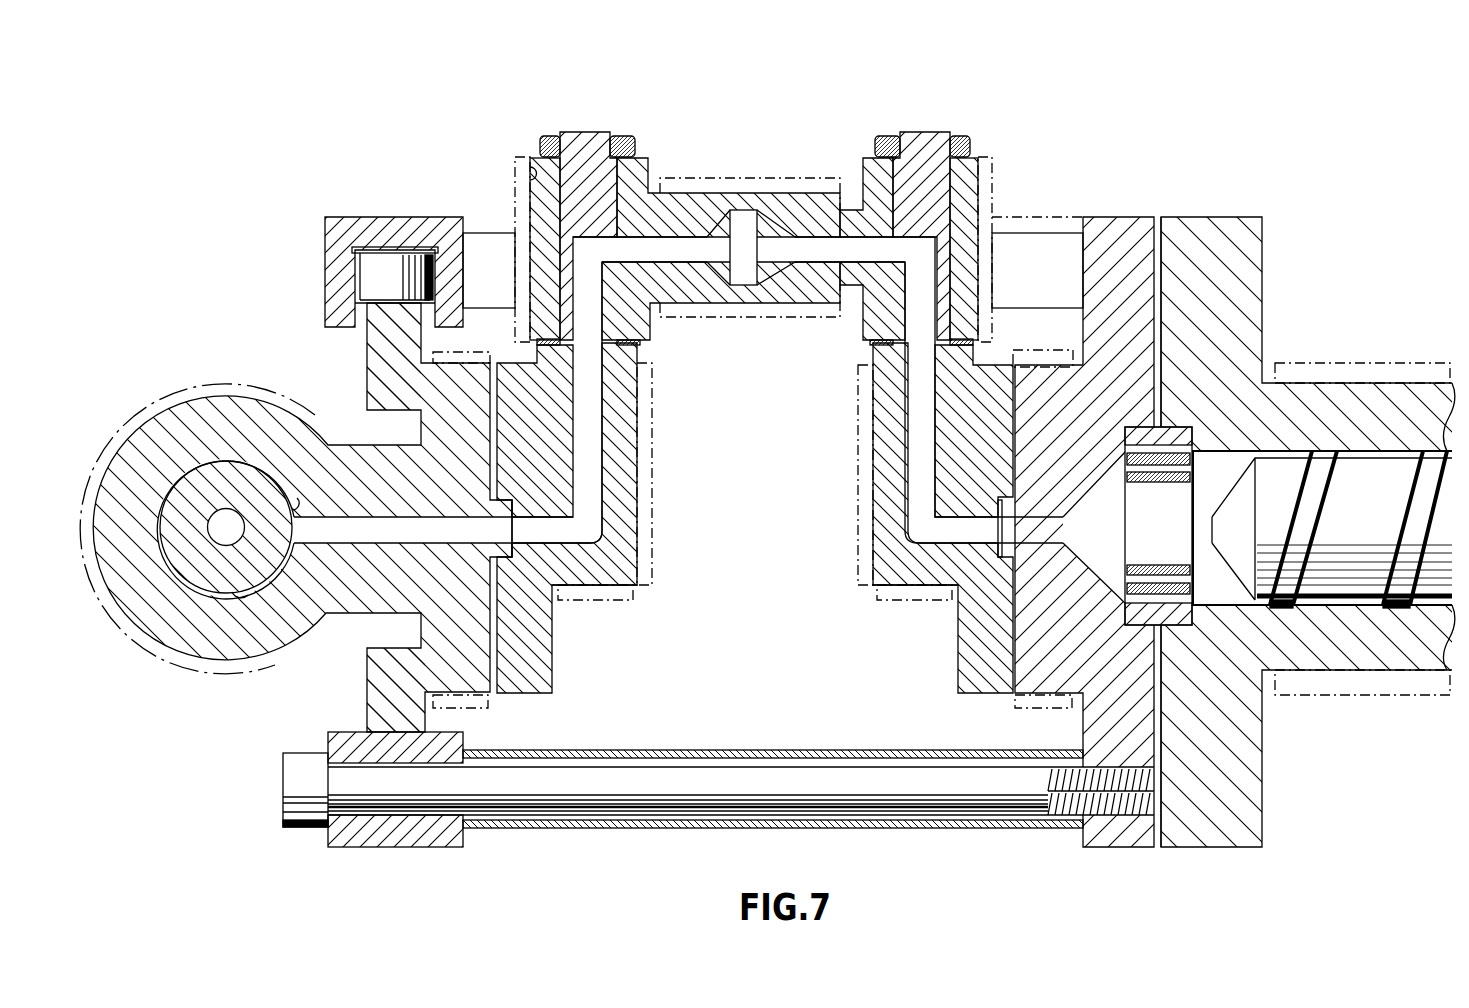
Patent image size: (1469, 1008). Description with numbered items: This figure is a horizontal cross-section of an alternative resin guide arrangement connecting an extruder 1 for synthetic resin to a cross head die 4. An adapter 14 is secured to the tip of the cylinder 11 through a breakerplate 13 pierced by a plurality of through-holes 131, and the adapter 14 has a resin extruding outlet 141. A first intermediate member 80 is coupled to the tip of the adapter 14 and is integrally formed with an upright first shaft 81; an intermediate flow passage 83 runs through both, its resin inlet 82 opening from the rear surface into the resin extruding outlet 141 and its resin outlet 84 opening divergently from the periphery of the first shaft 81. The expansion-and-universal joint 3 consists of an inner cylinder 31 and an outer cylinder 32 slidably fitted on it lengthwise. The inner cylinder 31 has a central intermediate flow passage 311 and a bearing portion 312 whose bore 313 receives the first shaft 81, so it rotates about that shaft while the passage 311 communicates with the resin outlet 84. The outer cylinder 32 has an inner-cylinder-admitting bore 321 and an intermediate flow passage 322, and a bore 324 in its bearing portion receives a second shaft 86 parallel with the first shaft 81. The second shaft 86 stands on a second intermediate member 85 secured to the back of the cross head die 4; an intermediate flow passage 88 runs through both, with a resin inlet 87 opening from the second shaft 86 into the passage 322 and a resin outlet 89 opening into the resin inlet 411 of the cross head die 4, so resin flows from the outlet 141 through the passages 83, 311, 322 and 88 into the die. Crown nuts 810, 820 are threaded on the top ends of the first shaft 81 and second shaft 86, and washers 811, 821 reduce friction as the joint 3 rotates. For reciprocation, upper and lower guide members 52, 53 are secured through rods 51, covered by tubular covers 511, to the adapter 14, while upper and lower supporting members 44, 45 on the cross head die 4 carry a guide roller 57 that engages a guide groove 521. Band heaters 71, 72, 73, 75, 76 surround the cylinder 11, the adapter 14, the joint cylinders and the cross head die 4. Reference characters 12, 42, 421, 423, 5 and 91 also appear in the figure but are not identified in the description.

The extruder 1 is at (1268, 532).
The cylinder 11 is at (1385, 393).
The bore with screw 12 is at (1351, 519).
The breakerplate 13 is at (1153, 504).
The through-holes 131 is at (1140, 468).
The adapter 14 is at (1116, 217).
The expansion-and-universal joint 3 is at (754, 237).
The inner cylinder 31 is at (808, 215).
The intermediate flow passage 311 is at (835, 247).
The bearing portion 312 is at (975, 165).
The bore 313 is at (948, 190).
The outer cylinder 32 is at (656, 200).
The inner-cylinder-admitting bore 321 is at (775, 215).
The intermediate flow passage 322 is at (690, 262).
The bore 324 is at (530, 170).
The cross head die 4 is at (341, 497).
The resin inlet 411 is at (430, 540).
The shaft 42 is at (183, 478).
The bore 421 is at (215, 527).
The groove 423 is at (244, 594).
The supporting member 44 is at (370, 342).
The supporting member 45 is at (368, 690).
The cap assembly 5 is at (369, 255).
The rods 51 is at (850, 810).
The tubular covers 511 is at (694, 828).
The guide member 52 is at (325, 255).
The guide groove 521 is at (368, 266).
The guide member 53 is at (455, 840).
The guide roller 57 is at (405, 262).
The band heater 71 is at (1330, 698).
The band heater 72 is at (1025, 706).
The band heater 73 is at (992, 217).
The band heater 75 is at (515, 190).
The band heater 76 is at (180, 662).
The first intermediate member 80 is at (875, 506).
The first shaft 81 is at (912, 130).
The crown nut 810 is at (876, 140).
The washer 811 is at (963, 140).
The resin inlet 82 is at (962, 518).
The crown nut 820 is at (624, 140).
The washer 821 is at (540, 160).
The intermediate flow passage 83 is at (905, 436).
The resin outlet 84 is at (905, 242).
The second intermediate member 85 is at (636, 506).
The second shaft 86 is at (575, 136).
The resin inlet 87 is at (628, 262).
The intermediate flow passage 88 is at (595, 436).
The resin outlet 89 is at (537, 512).
The gasket 91 is at (652, 575).
The resin extruding outlet 141 is at (1035, 517).